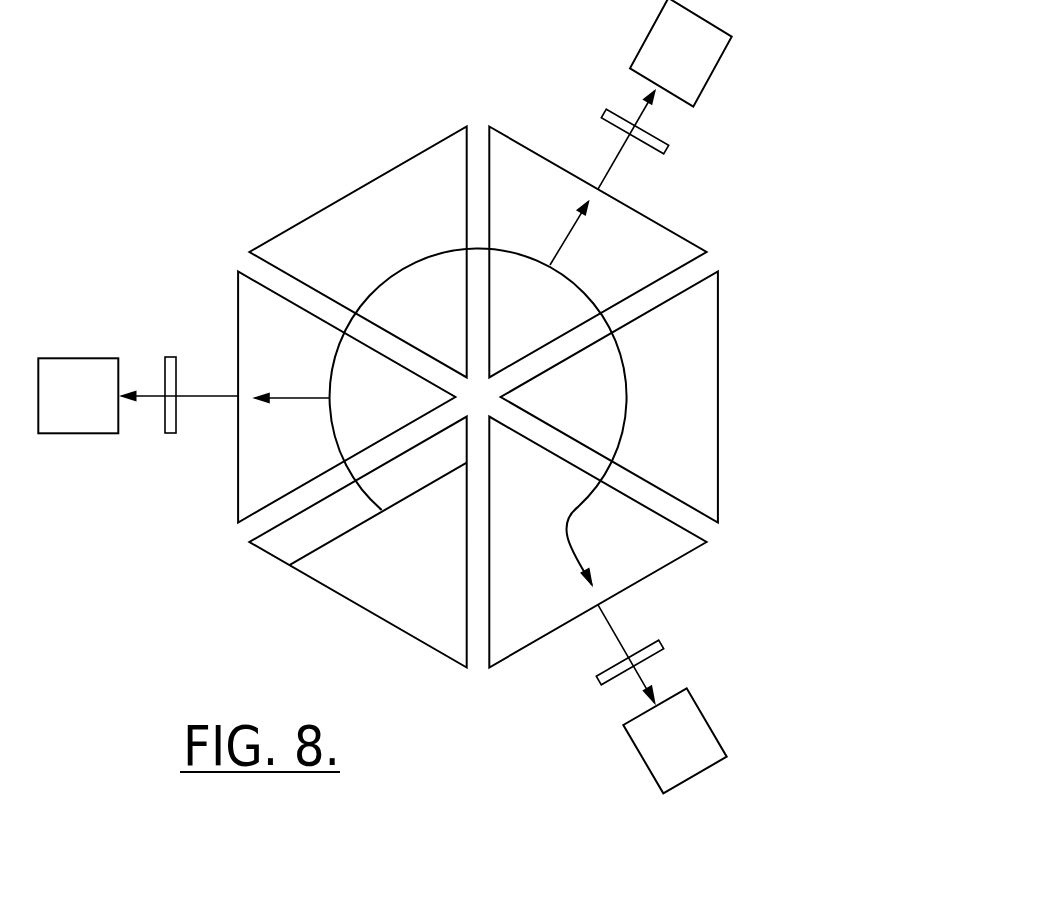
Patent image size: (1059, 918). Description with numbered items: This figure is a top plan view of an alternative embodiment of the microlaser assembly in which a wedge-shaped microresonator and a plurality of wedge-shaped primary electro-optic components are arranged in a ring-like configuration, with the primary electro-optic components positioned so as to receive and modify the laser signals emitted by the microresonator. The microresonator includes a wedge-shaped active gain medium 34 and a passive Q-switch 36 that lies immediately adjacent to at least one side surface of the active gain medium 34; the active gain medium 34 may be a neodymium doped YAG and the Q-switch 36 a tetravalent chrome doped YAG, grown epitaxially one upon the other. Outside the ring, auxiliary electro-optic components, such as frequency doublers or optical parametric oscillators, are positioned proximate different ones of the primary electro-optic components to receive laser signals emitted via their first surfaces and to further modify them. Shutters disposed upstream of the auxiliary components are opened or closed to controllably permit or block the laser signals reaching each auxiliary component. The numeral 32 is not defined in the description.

The light source 32 is at (184, 11).
The active gain medium 34 is at (427, 568).
The Q-switch 36 is at (332, 527).